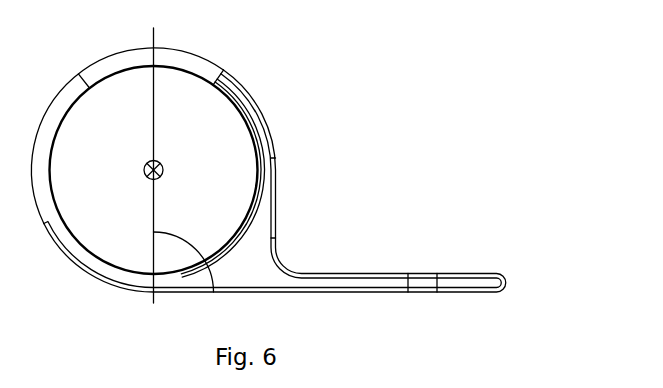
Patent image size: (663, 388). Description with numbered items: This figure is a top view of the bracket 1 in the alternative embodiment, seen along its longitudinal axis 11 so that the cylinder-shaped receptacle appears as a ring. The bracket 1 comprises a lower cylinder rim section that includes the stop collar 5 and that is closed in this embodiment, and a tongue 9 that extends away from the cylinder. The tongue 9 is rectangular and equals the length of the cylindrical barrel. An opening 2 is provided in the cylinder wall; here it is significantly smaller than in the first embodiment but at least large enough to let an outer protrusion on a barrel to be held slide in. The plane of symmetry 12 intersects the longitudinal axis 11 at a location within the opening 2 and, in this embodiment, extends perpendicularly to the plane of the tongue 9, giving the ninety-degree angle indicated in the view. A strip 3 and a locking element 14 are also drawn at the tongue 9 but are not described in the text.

The bracket 1 is at (268, 171).
The opening 2 is at (187, 62).
The strip 3 is at (246, 102).
The stop collar 5 is at (233, 240).
The tongue 9 is at (350, 283).
The longitudinal axis 11 is at (143, 171).
The plane of symmetry 12 is at (154, 130).
The locking element 14 is at (423, 282).